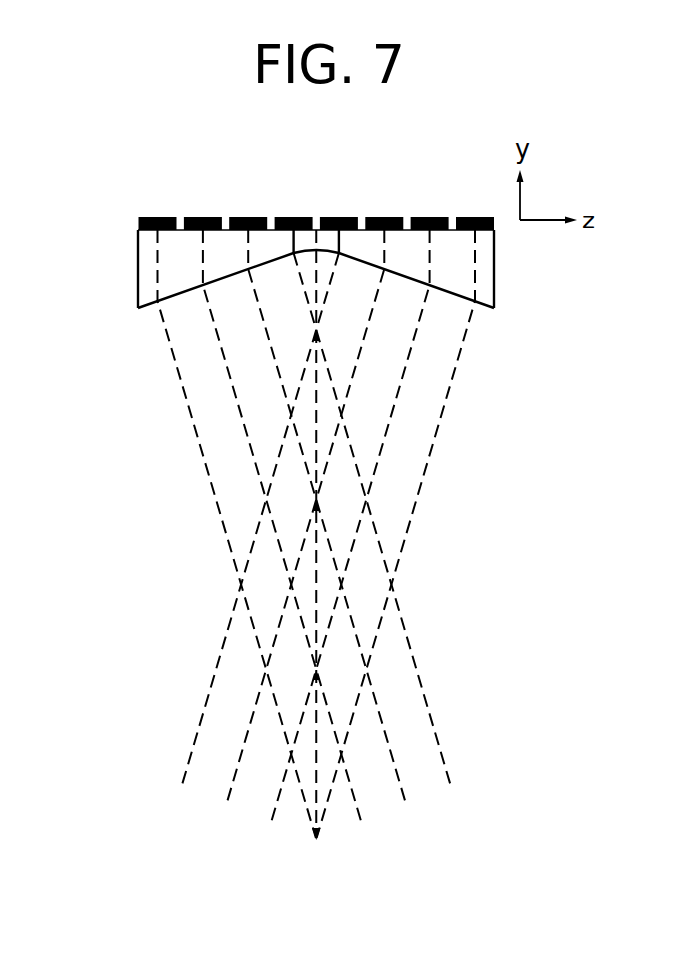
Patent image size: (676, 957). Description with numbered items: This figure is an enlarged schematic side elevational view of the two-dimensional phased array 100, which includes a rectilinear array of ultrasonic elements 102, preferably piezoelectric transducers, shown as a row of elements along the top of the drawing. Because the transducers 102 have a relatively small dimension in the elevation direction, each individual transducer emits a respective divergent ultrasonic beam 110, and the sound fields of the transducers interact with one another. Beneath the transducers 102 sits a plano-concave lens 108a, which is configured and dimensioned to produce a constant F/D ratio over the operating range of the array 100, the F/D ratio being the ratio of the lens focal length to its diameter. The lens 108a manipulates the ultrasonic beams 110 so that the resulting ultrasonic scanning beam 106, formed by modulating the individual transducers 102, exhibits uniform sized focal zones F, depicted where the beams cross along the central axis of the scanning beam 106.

The two-dimensional phased array 100 is at (149, 188).
The ultrasonic elements 102 is at (382, 217).
The plano-concave lens 108a is at (138, 277).
The ultrasonic scanning beam 106 is at (186, 538).
The divergent ultrasonic beam 110 is at (448, 400).
The focal zones F is at (364, 588).